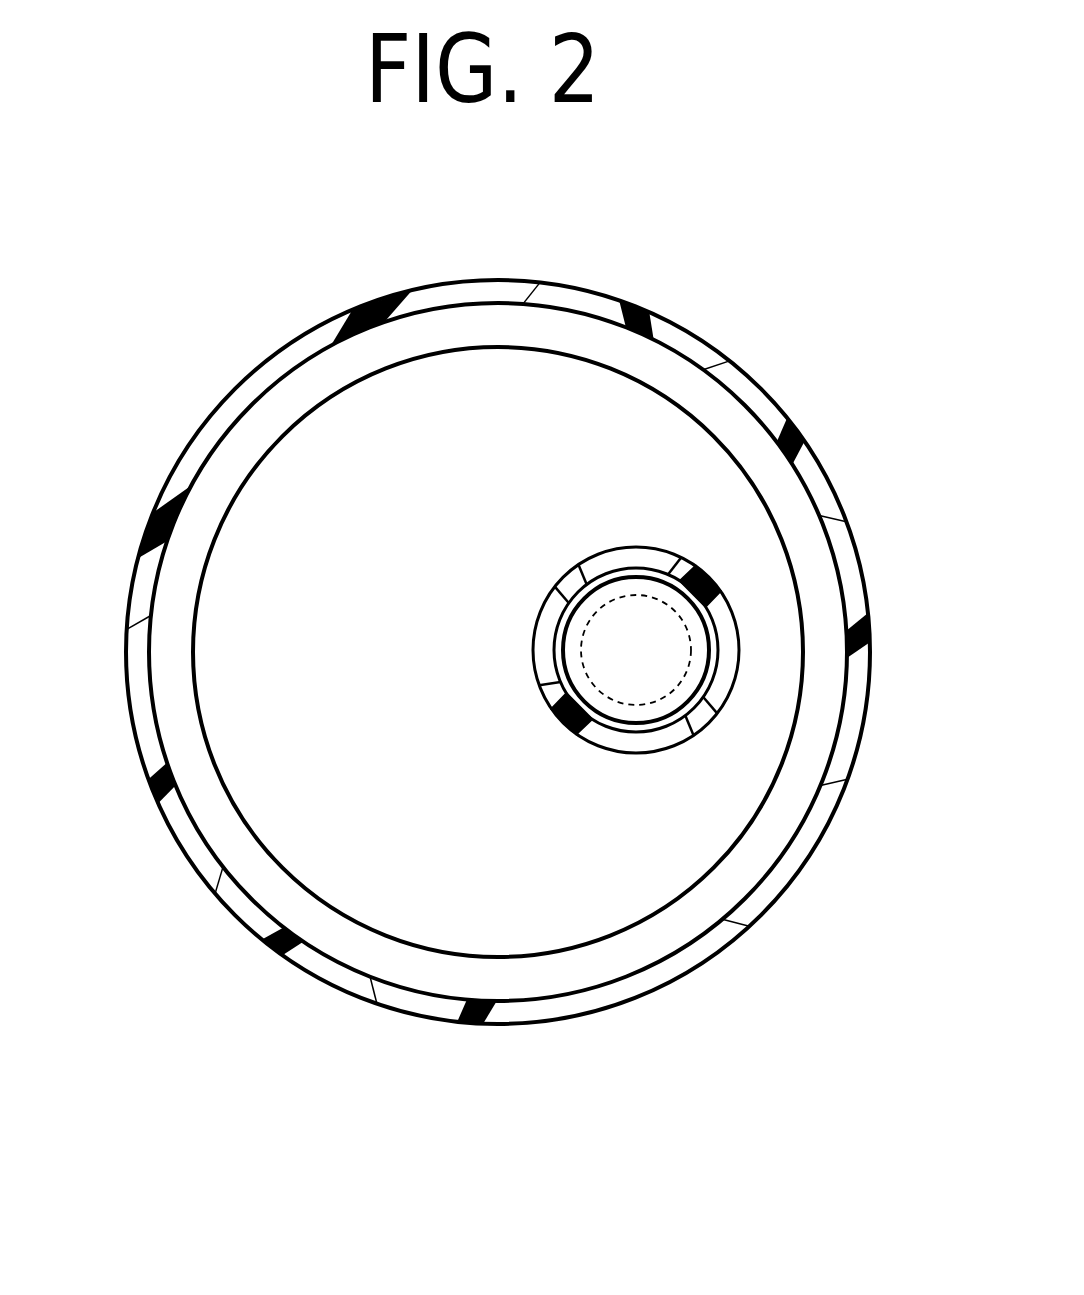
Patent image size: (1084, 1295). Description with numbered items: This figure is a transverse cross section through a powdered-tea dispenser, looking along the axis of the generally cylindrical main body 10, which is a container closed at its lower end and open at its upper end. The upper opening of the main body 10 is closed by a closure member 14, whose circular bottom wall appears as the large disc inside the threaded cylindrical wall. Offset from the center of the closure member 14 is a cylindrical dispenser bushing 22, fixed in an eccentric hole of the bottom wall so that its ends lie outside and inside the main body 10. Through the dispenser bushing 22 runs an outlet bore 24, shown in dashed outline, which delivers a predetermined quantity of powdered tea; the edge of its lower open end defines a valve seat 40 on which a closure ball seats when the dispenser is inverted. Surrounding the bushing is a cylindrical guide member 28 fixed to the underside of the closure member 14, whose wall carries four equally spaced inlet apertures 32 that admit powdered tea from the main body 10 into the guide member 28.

The main body 10 is at (780, 357).
The closure member 14 is at (317, 485).
The dispenser bushing 22 is at (612, 740).
The outlet bore 24 is at (690, 648).
The guide member 28 is at (517, 617).
The inlet apertures 32 is at (632, 560).
The valve seat 40 is at (610, 853).